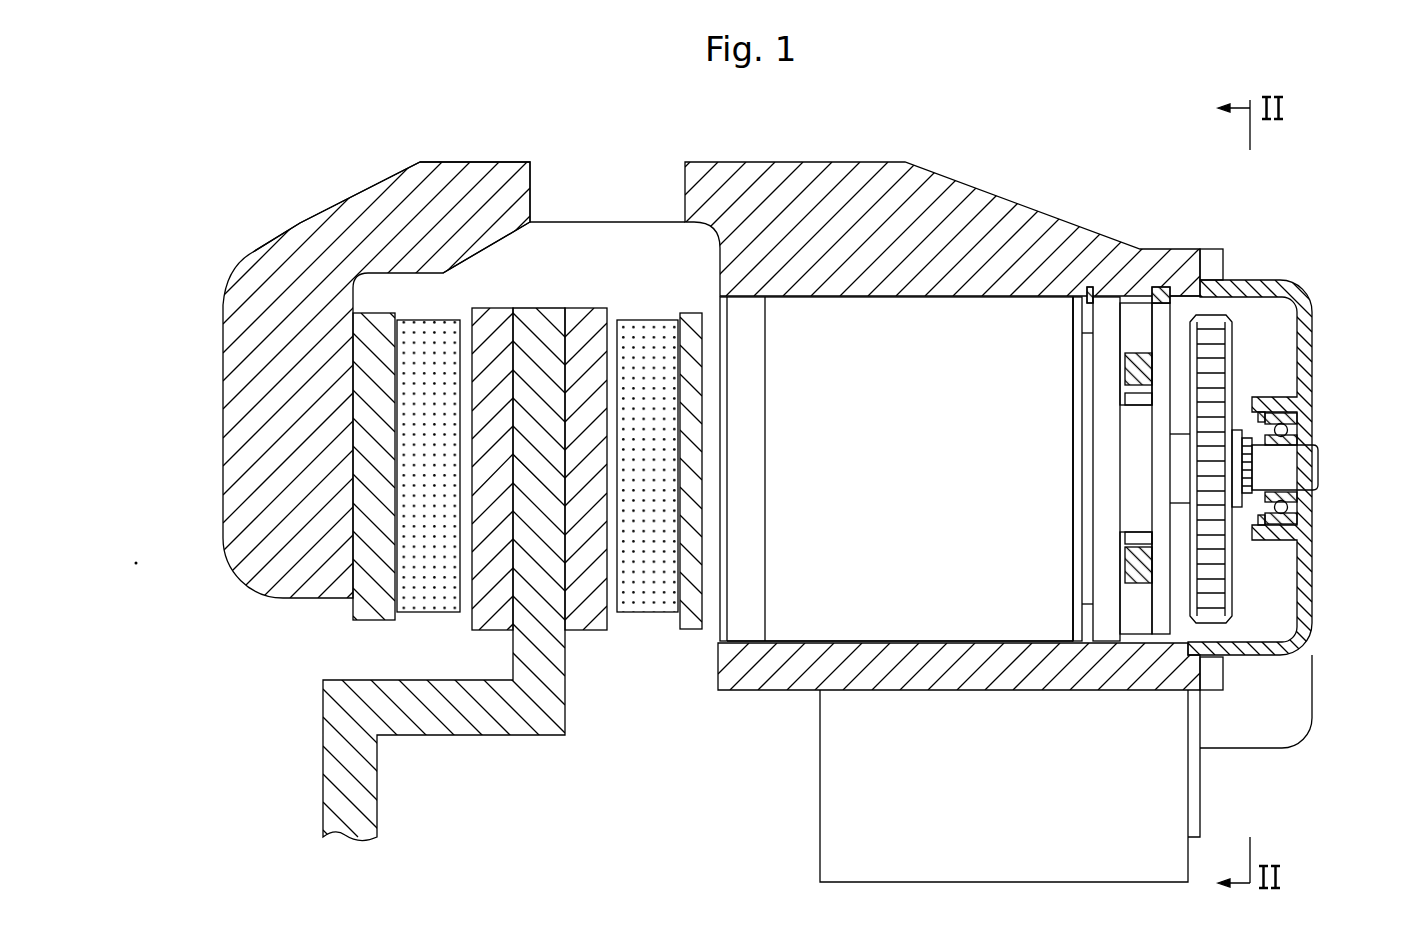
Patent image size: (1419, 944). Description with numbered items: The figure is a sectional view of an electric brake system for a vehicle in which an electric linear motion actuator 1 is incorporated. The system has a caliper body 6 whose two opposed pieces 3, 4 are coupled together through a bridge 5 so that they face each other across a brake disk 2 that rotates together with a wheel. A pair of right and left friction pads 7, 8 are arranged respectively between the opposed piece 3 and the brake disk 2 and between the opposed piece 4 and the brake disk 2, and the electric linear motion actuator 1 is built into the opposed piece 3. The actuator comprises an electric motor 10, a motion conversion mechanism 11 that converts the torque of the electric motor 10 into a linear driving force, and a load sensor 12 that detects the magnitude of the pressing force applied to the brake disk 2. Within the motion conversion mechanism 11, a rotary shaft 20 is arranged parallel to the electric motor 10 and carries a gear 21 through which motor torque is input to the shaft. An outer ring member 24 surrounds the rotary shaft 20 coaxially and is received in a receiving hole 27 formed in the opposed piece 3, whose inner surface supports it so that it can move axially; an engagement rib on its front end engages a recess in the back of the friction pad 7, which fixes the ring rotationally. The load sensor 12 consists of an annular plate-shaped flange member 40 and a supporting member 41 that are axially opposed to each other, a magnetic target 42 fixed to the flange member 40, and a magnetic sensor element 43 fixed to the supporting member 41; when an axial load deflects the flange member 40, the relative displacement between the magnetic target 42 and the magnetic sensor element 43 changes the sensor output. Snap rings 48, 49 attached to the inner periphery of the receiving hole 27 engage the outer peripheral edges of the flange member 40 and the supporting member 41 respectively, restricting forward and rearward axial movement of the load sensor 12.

The electric linear motion actuator 1 is at (798, 290).
The brake disk 2 is at (537, 320).
The opposed piece 3 is at (742, 683).
The opposed piece 4 is at (245, 383).
The bridge 5 is at (465, 170).
The caliper body 6 is at (298, 222).
The friction pad 7 is at (647, 600).
The friction pad 8 is at (425, 607).
The electric motor 10 is at (1175, 790).
The motion conversion mechanism 11 is at (945, 296).
The load sensor 12 is at (1153, 342).
The rotary shaft 20 is at (1305, 478).
The gear 21 is at (1240, 570).
The outer ring member 24 is at (867, 312).
The receiving hole 27 is at (806, 645).
The flange member 40 is at (1108, 305).
The supporting member 41 is at (1137, 312).
The magnetic target 42 is at (1145, 403).
The magnetic sensor element 43 is at (1145, 387).
The snap ring 48 is at (1090, 287).
The snap ring 49 is at (1161, 287).